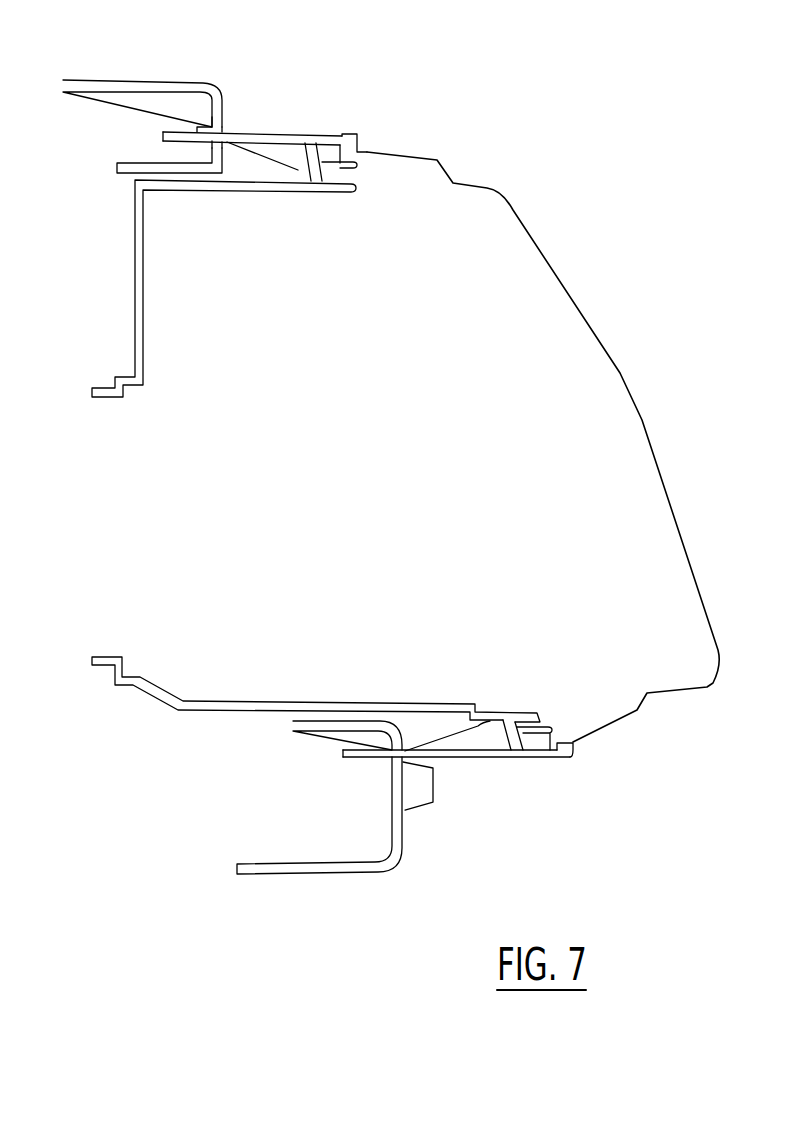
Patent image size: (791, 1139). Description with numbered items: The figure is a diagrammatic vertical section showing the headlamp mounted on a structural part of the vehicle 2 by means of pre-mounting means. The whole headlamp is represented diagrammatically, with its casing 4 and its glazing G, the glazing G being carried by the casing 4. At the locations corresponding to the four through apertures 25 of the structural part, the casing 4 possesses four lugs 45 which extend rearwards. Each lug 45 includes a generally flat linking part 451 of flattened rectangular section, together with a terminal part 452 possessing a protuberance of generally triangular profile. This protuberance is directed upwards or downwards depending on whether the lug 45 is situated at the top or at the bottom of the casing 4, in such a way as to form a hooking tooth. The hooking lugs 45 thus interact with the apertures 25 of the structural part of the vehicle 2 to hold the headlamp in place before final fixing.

The vehicle 2 is at (139, 86).
The casing 4 is at (130, 288).
The through apertures 25 is at (213, 147).
The lugs 45 is at (337, 442).
The linking part 451 is at (288, 133).
The terminal part 452 is at (175, 130).
The glazing G is at (620, 373).